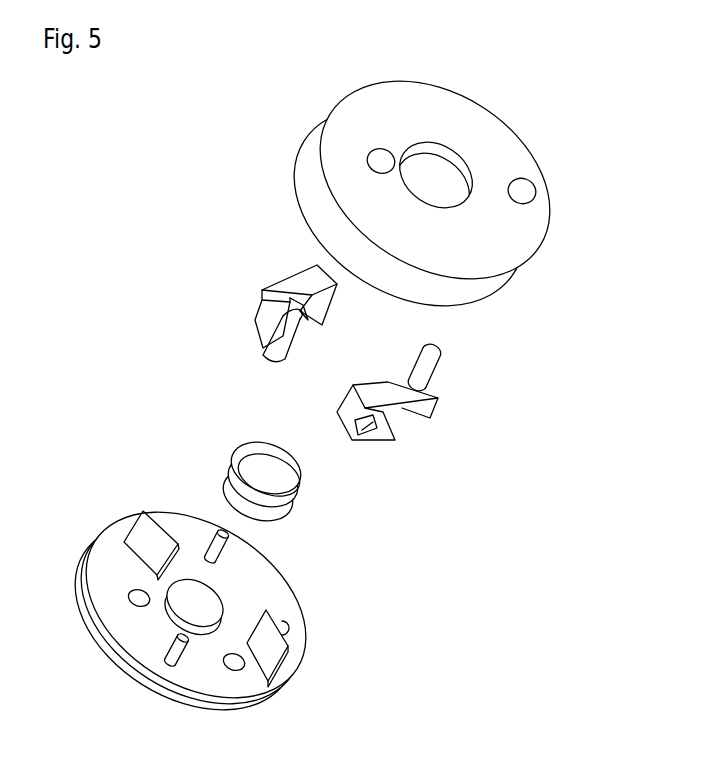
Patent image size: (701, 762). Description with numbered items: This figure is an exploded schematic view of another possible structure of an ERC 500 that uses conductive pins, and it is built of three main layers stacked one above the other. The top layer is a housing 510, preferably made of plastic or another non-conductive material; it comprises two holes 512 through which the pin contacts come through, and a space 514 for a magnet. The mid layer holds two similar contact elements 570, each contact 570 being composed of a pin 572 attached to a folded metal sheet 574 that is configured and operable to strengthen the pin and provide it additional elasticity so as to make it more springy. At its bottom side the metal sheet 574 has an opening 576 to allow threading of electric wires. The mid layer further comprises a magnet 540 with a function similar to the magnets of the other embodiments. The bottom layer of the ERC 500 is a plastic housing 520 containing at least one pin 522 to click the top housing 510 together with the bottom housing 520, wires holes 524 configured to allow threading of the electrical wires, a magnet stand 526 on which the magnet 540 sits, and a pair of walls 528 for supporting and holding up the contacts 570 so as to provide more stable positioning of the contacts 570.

The ERC 500 is at (123, 128).
The housing 510 is at (443, 194).
The holes 512 is at (367, 160).
The space for a magnet 514 is at (436, 167).
The plastic housing 520 is at (204, 611).
The pin 522 is at (170, 664).
The wires holes 524 is at (127, 598).
The magnet stand 526 is at (212, 585).
The walls 528 is at (288, 657).
The magnet 540 is at (303, 491).
The contact element 570 is at (384, 368).
The pin 572 is at (428, 368).
The folded metal sheet 574 is at (337, 405).
The opening 576 is at (397, 432).